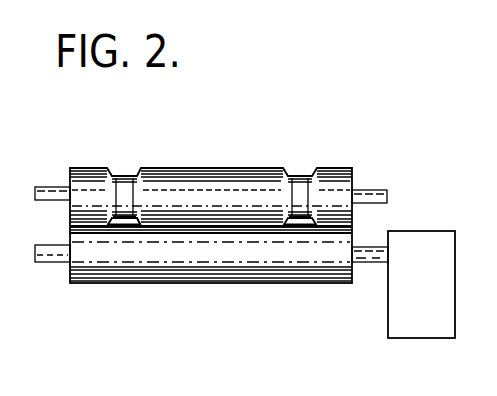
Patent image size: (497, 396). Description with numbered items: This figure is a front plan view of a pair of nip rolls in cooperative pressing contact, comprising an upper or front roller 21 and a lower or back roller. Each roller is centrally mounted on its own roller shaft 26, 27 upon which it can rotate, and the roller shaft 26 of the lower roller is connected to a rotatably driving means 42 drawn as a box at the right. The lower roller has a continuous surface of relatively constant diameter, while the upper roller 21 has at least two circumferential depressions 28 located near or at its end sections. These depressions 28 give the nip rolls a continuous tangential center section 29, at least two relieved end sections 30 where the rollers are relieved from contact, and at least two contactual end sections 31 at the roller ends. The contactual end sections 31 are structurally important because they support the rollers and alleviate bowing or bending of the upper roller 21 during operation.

The upper or front roller 21 is at (352, 180).
The circumferential depressions 28 is at (125, 178).
The continuous tangential center section 29 is at (265, 225).
The contactual end sections 31 is at (70, 226).
The relieved end sections 30 is at (123, 222).
The roller shaft 27 is at (390, 197).
The roller shaft 26 is at (361, 247).
The rotatably driving means 42 is at (388, 303).